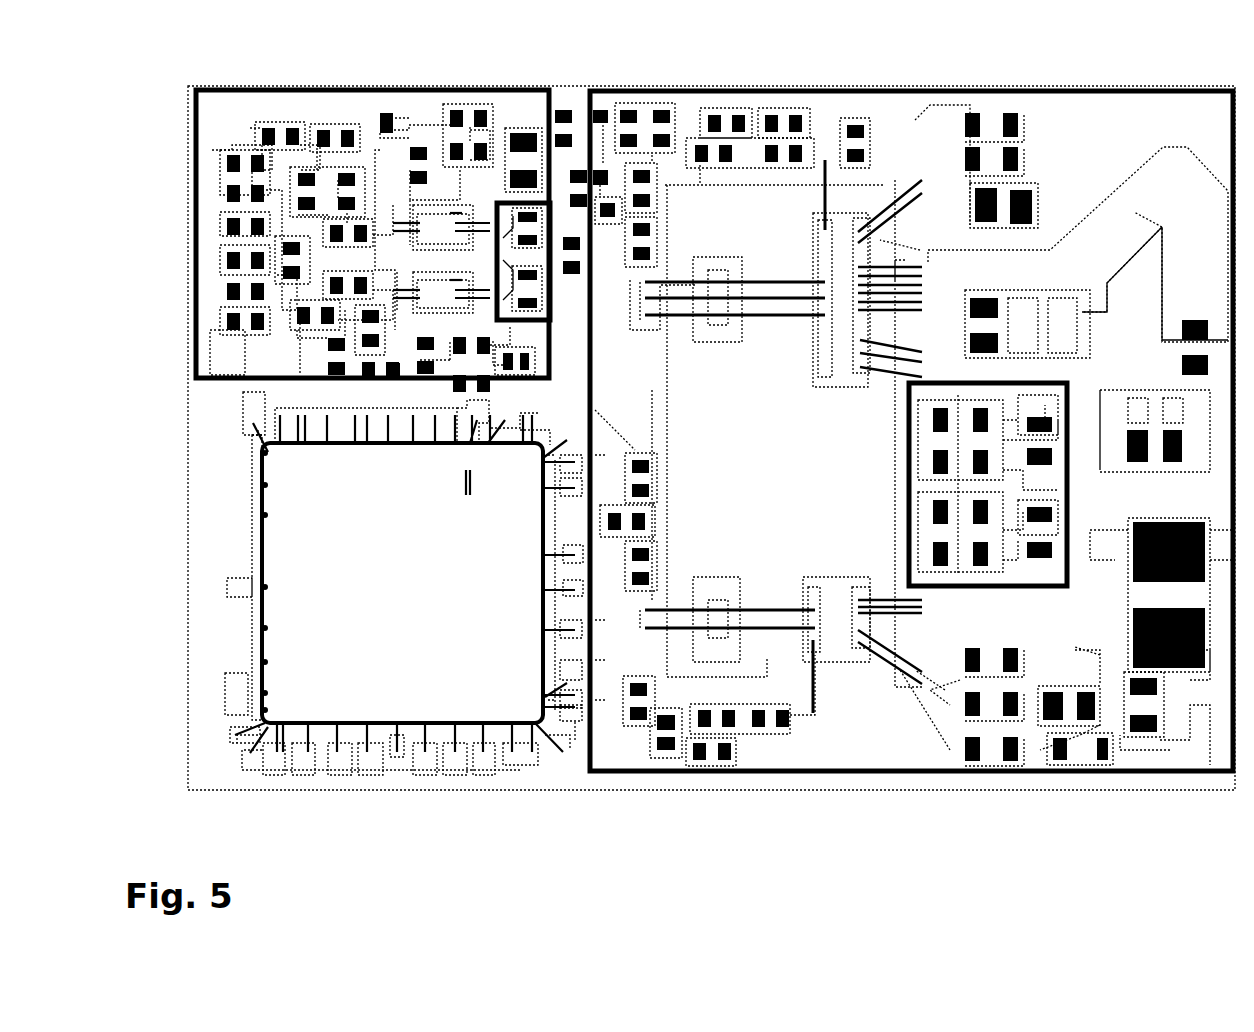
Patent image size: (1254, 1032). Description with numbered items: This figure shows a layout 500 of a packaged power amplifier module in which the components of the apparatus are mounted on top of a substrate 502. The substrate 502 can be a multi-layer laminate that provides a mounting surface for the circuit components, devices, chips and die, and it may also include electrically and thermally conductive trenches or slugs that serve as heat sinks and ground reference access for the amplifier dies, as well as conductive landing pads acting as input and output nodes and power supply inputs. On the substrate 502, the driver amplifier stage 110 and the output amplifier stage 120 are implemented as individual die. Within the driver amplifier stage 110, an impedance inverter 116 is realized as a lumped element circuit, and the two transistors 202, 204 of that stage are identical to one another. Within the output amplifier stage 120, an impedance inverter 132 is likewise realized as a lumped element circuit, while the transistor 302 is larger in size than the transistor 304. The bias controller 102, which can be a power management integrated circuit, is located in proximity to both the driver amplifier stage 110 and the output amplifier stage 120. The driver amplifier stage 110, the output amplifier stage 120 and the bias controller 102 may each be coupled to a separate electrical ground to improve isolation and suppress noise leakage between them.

The layout 500 is at (341, 869).
The substrate 502 is at (225, 487).
The driver amplifier stage 110 is at (322, 207).
The impedance inverter 116 is at (502, 200).
The transistor 202 is at (446, 199).
The transistor 204 is at (410, 272).
The bias controller 102 is at (303, 540).
The output amplifier stage 120 is at (894, 473).
The transistor 302 is at (810, 369).
The transistor 304 is at (798, 572).
The impedance inverter 132 is at (1025, 590).